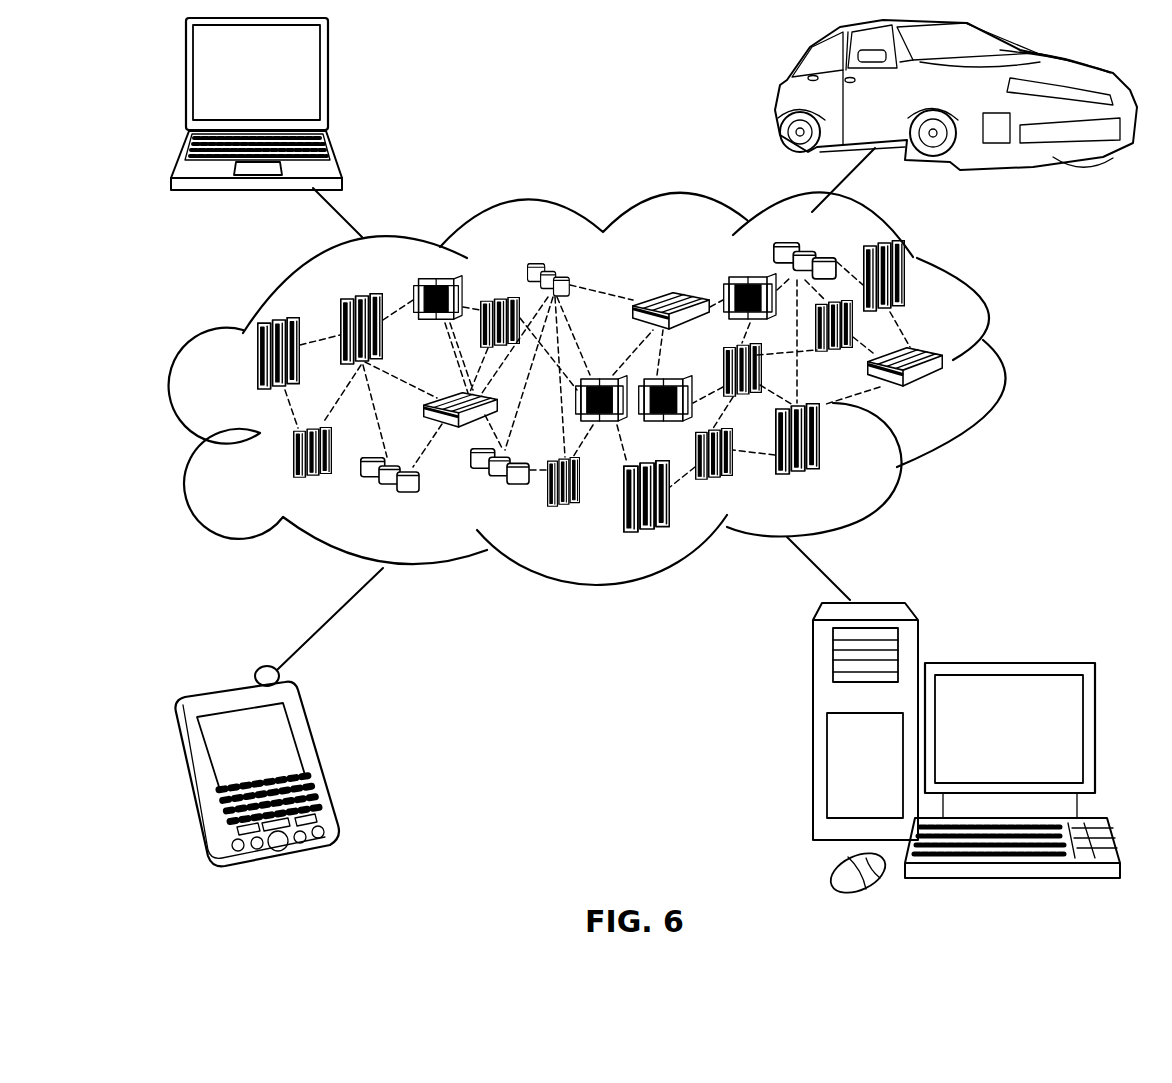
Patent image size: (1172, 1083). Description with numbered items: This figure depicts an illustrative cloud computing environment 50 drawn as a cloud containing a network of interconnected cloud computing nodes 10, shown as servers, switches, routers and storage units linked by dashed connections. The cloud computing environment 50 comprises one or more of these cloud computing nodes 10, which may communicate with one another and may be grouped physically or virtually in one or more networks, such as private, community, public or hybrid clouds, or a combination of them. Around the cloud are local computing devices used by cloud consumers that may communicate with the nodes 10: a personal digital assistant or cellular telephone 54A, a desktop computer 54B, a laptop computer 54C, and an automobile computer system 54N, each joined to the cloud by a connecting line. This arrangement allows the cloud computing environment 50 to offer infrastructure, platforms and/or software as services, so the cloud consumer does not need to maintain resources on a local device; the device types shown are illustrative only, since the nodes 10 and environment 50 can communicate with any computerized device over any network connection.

The cloud computing nodes 10 is at (947, 397).
The cloud computing environment 50 is at (1003, 367).
The personal digital assistant (PDA) or cellular telephone 54A is at (316, 760).
The desktop computer 54B is at (1007, 663).
The laptop computer 54C is at (330, 81).
The automobile computer system 54N is at (782, 103).